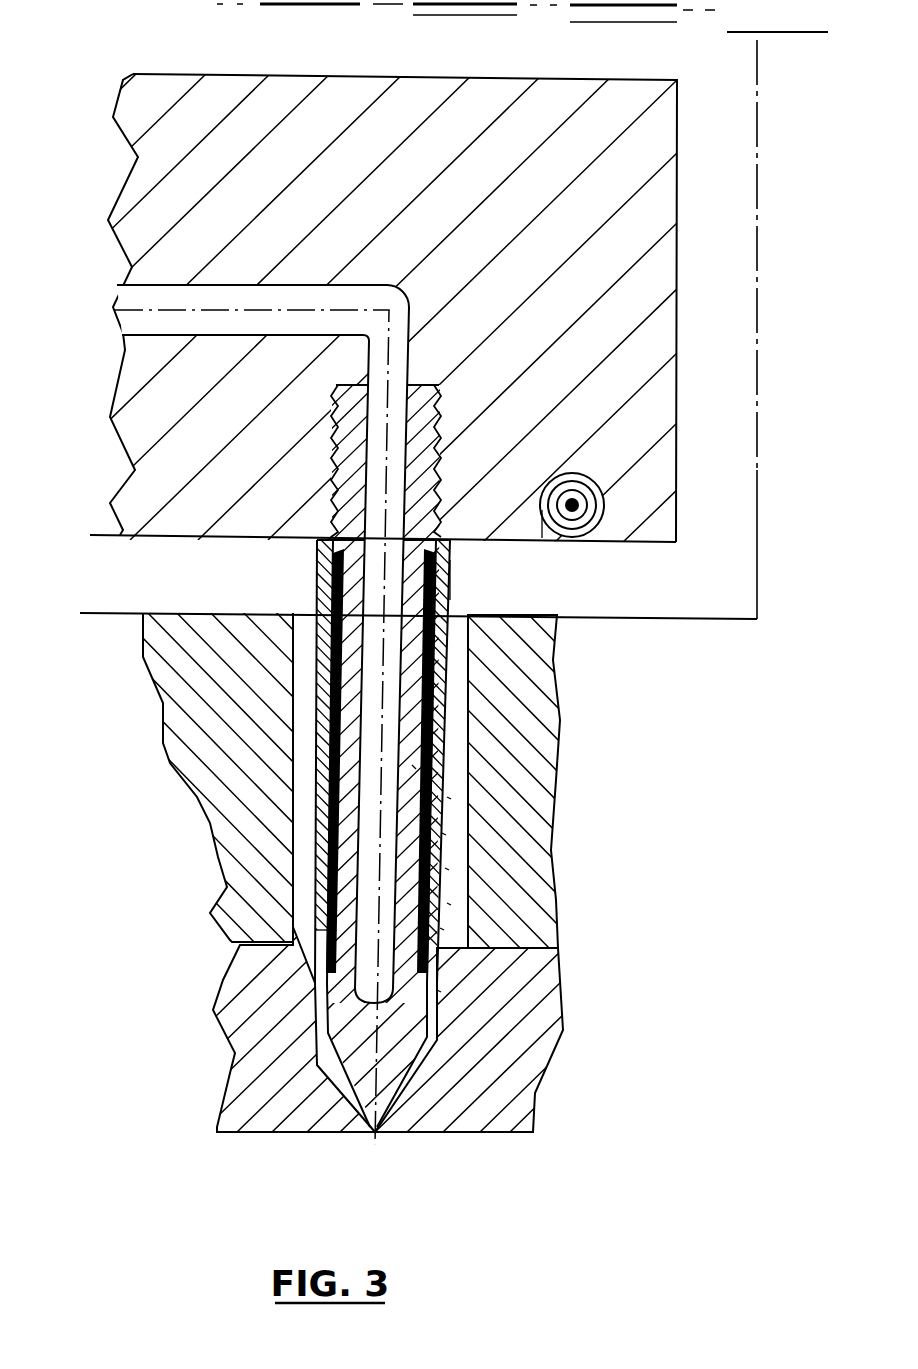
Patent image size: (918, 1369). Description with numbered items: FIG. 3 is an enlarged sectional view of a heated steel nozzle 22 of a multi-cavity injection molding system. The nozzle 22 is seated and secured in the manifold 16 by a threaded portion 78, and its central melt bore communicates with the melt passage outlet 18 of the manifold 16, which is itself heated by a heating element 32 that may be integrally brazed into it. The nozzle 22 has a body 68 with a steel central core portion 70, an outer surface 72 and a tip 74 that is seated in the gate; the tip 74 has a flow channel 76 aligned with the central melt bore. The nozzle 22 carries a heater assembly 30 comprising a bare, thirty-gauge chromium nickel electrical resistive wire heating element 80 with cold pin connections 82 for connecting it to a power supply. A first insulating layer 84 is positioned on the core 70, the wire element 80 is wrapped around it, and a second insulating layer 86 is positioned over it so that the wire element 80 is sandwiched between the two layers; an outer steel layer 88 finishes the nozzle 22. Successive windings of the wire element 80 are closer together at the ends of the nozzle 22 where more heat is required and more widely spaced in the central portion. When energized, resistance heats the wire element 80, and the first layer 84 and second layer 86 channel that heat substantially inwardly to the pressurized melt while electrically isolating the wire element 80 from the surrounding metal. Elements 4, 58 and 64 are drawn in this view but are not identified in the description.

The nozzle 4 is at (457, 705).
The manifold 16 is at (772, 407).
The outlet 18 is at (305, 298).
The nozzle 22 is at (732, 638).
The heater assembly 30 is at (310, 867).
The heating element 32 is at (605, 497).
The insulating air gap 58 is at (466, 650).
The mold cavity plate 64 is at (455, 733).
The body 68 is at (412, 766).
The central core portion 70 is at (445, 797).
The outer surface 72 is at (442, 833).
The tip 74 is at (390, 1084).
The flow channel 76 is at (345, 1040).
The threaded portion 78 is at (441, 457).
The wire heating element 80 is at (443, 868).
The cold pin connections 82 is at (437, 570).
The first insulating layer 84 is at (445, 902).
The second insulating layer 86 is at (442, 928).
The outer steel layer 88 is at (437, 990).